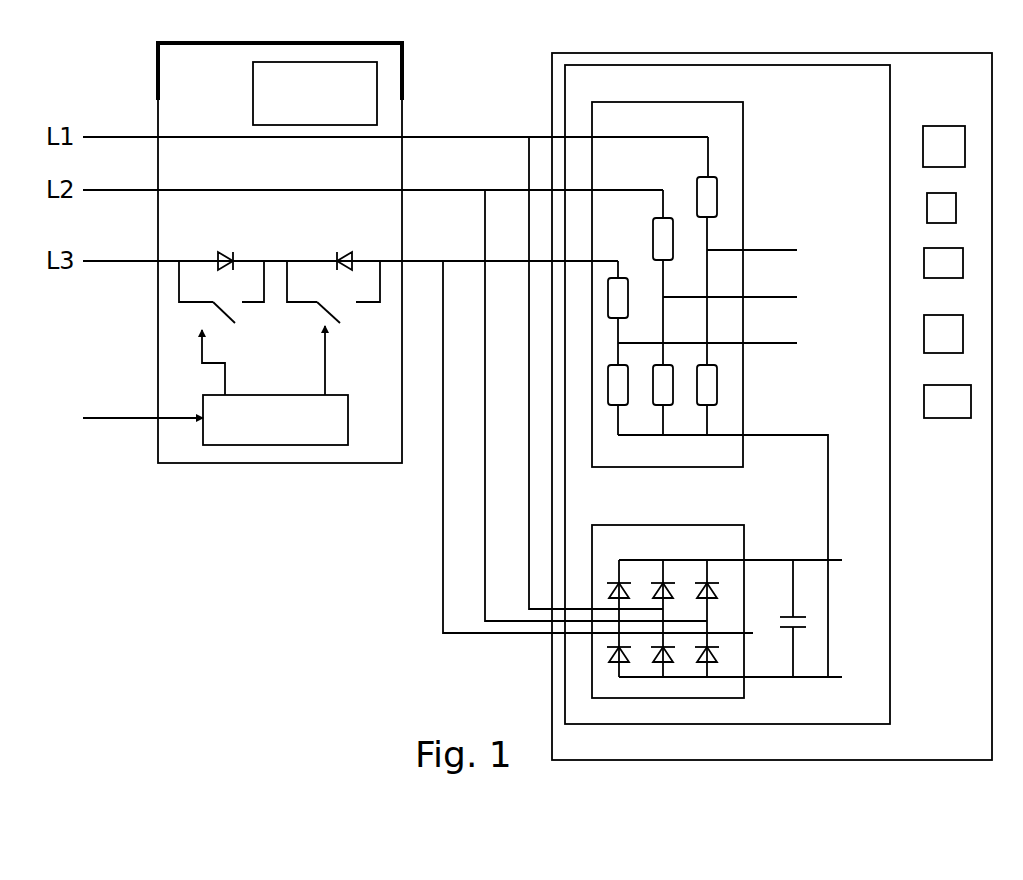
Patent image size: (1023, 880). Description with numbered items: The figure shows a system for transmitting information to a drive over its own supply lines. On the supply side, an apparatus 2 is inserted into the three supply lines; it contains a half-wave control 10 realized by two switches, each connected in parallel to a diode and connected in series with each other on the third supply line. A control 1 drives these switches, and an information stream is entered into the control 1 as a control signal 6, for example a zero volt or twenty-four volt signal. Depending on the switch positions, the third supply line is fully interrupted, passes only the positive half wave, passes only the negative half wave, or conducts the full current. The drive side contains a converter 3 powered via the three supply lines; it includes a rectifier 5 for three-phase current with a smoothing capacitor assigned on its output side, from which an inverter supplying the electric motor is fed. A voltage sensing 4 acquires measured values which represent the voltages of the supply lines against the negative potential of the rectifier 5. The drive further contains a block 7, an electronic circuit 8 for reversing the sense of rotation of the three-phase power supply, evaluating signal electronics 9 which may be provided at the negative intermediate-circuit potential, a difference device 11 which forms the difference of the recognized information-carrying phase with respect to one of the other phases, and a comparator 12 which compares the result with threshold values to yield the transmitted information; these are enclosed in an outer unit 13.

The control 1 is at (275, 420).
The apparatus 2 is at (232, 253).
The converter 3 is at (727, 394).
The voltage sensing 4 is at (717, 389).
The rectifier 5 is at (717, 611).
The control signal 6 is at (131, 419).
The electrical component 7 is at (944, 146).
The electronic circuit 8 is at (941, 208).
The evaluating signal electronics 9 is at (943, 263).
The half-wave control 10 is at (315, 93).
The difference device 11 is at (943, 334).
The comparator 12 is at (947, 401).
The vehicle electrical system 13 is at (772, 406).